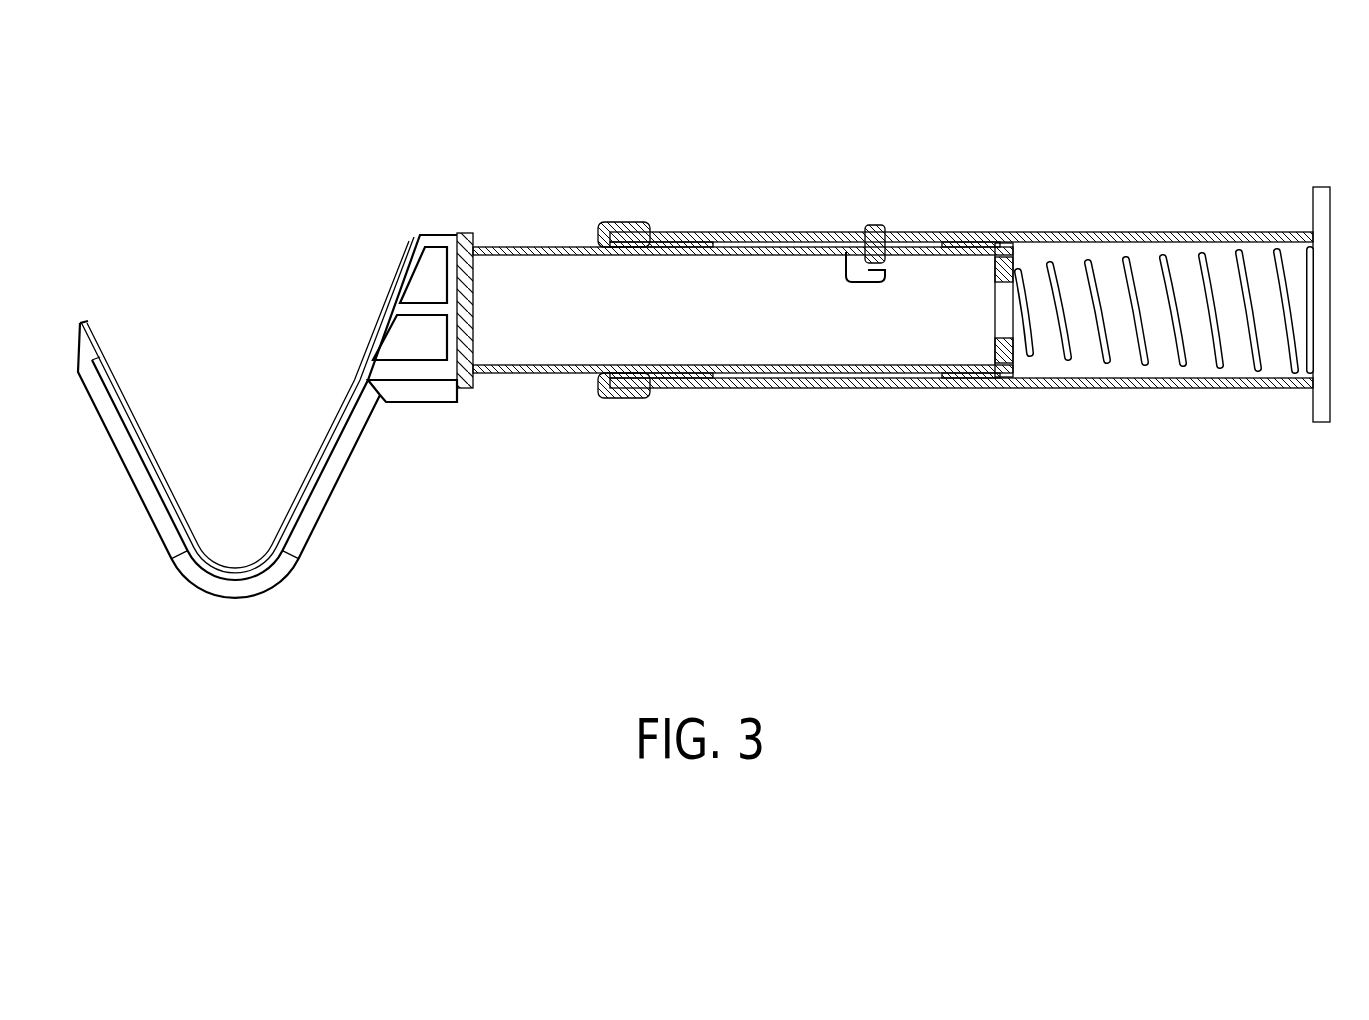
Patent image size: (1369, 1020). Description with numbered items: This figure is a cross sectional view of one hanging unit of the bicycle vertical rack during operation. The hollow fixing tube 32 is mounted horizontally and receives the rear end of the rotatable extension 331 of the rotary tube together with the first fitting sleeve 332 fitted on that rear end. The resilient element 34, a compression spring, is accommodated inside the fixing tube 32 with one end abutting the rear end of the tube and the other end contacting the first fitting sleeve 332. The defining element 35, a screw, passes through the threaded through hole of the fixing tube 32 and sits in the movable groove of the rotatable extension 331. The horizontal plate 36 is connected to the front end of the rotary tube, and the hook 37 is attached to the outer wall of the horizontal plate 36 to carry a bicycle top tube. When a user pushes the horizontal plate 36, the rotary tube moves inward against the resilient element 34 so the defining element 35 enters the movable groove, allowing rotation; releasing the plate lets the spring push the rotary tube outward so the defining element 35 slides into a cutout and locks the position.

The fixing tube 32 is at (1132, 232).
The resilient element 34 is at (1244, 252).
The defining element 35 is at (878, 225).
The horizontal plate 36 is at (466, 233).
The hook 37 is at (229, 590).
The rotatable extension 331 is at (787, 372).
The first fitting sleeve 332 is at (994, 242).